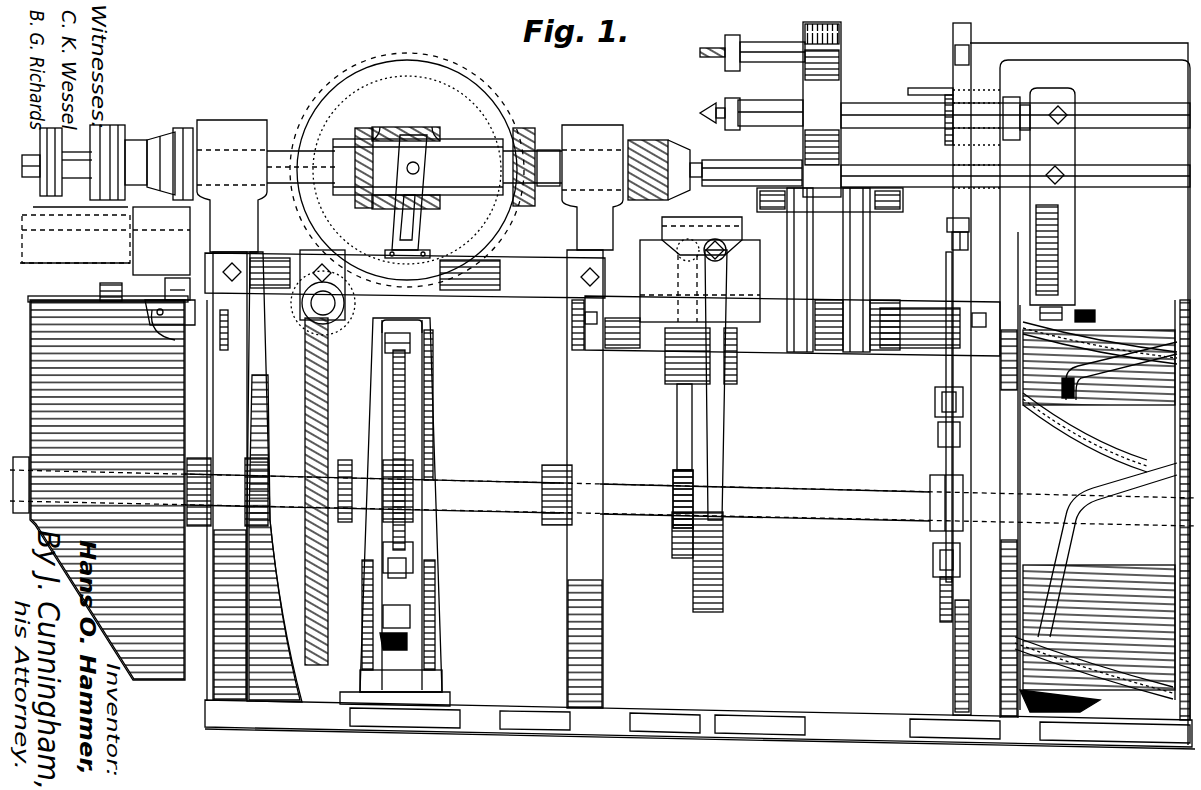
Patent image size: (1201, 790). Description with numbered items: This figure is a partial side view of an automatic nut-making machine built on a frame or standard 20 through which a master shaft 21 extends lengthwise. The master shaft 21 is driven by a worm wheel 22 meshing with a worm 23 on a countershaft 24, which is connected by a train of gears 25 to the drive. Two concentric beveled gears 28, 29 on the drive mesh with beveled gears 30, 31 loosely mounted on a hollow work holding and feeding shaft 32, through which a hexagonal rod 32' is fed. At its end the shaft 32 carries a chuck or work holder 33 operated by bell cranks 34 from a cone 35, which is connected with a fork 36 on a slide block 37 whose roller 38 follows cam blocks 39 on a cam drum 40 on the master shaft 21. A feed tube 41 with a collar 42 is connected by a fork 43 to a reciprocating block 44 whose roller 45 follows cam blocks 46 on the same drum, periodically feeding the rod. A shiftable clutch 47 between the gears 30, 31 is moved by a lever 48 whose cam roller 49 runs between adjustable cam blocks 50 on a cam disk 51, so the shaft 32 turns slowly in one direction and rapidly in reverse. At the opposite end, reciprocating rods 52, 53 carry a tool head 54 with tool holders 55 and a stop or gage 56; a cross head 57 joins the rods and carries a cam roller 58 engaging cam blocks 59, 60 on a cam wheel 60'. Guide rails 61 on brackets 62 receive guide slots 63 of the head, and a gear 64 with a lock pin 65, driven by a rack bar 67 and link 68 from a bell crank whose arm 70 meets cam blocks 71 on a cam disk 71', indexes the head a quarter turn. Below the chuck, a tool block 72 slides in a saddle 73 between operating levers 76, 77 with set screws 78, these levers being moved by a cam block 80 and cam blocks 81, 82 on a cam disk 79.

The frame or standard 20 is at (215, 668).
The master shaft 21 is at (480, 492).
The worm wheel 22 is at (330, 420).
The worm 23 is at (318, 318).
The countershaft 24 is at (302, 312).
The train of gears 25 is at (462, 80).
The beveled gear 28 is at (495, 98).
The beveled gear 29 is at (400, 126).
The beveled gear 30 is at (530, 140).
The beveled gear 31 is at (363, 134).
The hollow work holding and feeding shaft 32 is at (266, 170).
The hexagonal rod 32' is at (697, 152).
The chuck or work holder 33 is at (650, 160).
The bell cranks 34 is at (115, 135).
The cone 35 is at (155, 138).
The fork 36 is at (186, 130).
The slide block 37 is at (161, 241).
The roller 38 is at (194, 298).
The cam blocks 39 is at (178, 332).
The cam drum 40 is at (178, 382).
The feed tube 41 is at (72, 162).
The operating head or collar 42 is at (52, 185).
The fork 43 is at (25, 179).
The reciprocating block 44 is at (73, 254).
The roller 45 is at (100, 291).
The cam blocks 46 is at (165, 291).
The shiftable clutch 47 is at (447, 167).
The lever 48 is at (415, 240).
The cam roller 49 is at (412, 346).
The adjustable cam blocks 50 is at (395, 635).
The cam disk 51 is at (408, 422).
The reciprocating rod 52 is at (1015, 116).
The reciprocating rod 53 is at (1015, 177).
The tool head 54 is at (840, 95).
The tool holders or posts 55 is at (748, 50).
The stop or gage 56 is at (730, 170).
The cross head 57 is at (1039, 196).
The cam roller 58 is at (1065, 308).
The cam blocks 59 is at (1100, 335).
The cam blocks 60 is at (1113, 487).
The cam wheel 60' is at (1117, 549).
The guide rails 61 is at (893, 210).
The brackets 62 is at (858, 262).
The guide slots 63 is at (840, 42).
The gear or pinion 64 is at (953, 88).
The lock pin 65 is at (940, 92).
The rack bar 67 is at (955, 200).
The link 68 is at (950, 276).
The arm 70 is at (948, 372).
The cam blocks 71 is at (930, 500).
The cam disk 71' is at (926, 515).
The tool block 72 is at (735, 224).
The saddle 73 is at (745, 282).
The operating lever 76 is at (678, 432).
The operating lever 77 is at (722, 424).
The adjustable set screws 78 is at (728, 249).
The cam disk 79 is at (722, 455).
The cam block 80 is at (677, 527).
The cam block 81 is at (722, 530).
The cam block 82 is at (725, 590).